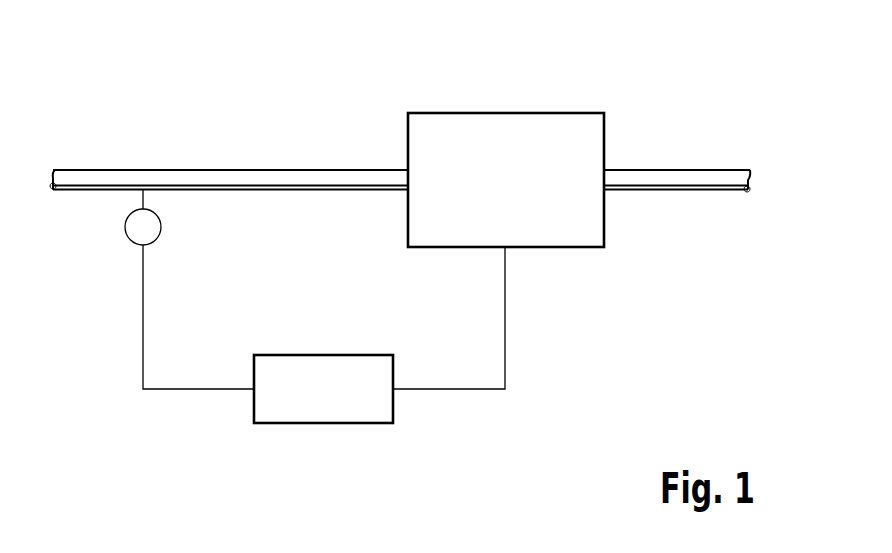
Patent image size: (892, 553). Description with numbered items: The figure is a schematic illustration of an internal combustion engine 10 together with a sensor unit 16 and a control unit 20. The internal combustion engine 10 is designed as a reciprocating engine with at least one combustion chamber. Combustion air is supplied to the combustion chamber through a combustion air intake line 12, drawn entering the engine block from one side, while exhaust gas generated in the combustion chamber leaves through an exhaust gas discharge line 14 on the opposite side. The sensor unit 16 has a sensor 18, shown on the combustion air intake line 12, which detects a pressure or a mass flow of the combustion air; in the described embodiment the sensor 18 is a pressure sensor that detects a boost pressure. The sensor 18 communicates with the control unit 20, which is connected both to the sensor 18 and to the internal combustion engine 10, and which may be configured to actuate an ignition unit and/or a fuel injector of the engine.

The internal combustion engine 10 is at (504, 104).
The combustion air intake line 12 is at (247, 176).
The exhaust gas discharge line 14 is at (676, 178).
The sensor unit 16 is at (122, 255).
The sensor 18 is at (162, 227).
The control unit 20 is at (324, 424).